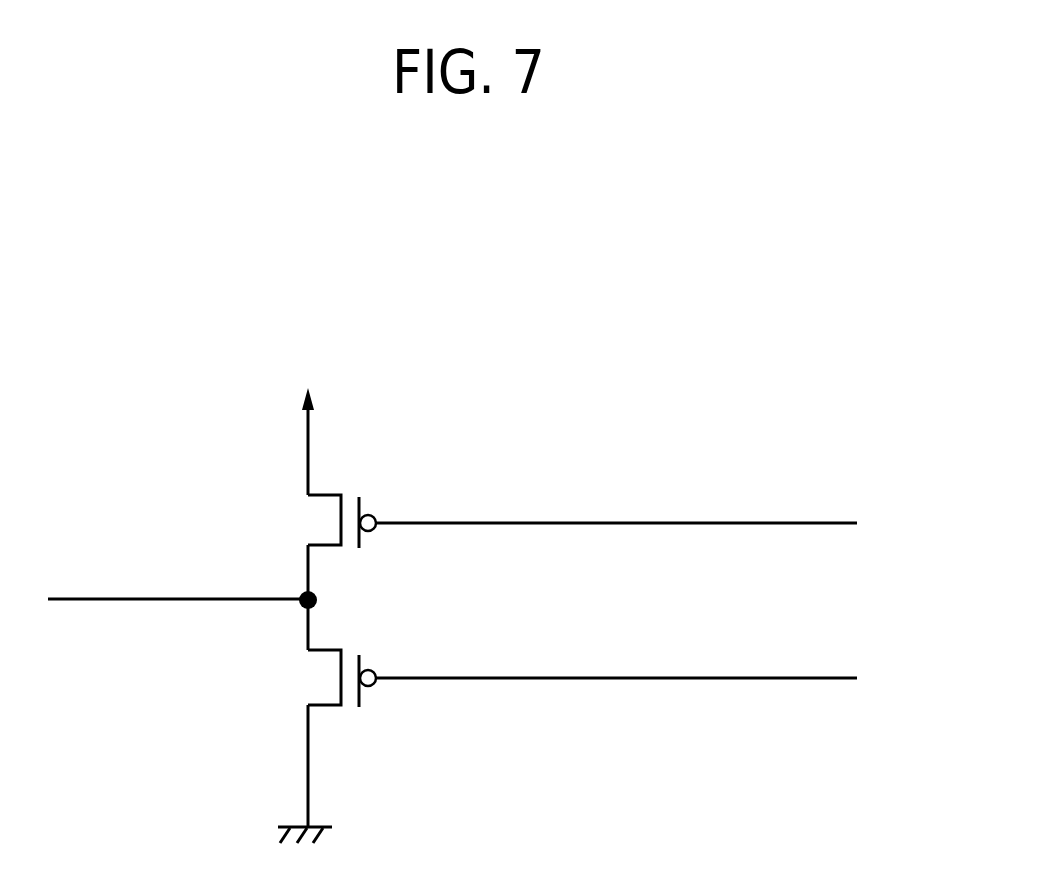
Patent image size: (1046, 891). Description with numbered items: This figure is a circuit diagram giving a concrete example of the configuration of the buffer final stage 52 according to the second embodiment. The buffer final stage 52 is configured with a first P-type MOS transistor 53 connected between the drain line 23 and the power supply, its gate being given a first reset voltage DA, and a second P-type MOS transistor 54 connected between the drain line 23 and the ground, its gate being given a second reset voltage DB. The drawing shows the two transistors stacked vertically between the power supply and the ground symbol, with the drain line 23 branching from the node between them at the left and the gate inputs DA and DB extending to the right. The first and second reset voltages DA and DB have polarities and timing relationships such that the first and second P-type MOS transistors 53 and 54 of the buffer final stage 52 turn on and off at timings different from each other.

The buffer final stage 52 is at (662, 474).
The first P-type MOS transistor 53 is at (312, 520).
The second P-type MOS transistor 54 is at (312, 677).
The drain line 23 is at (85, 602).